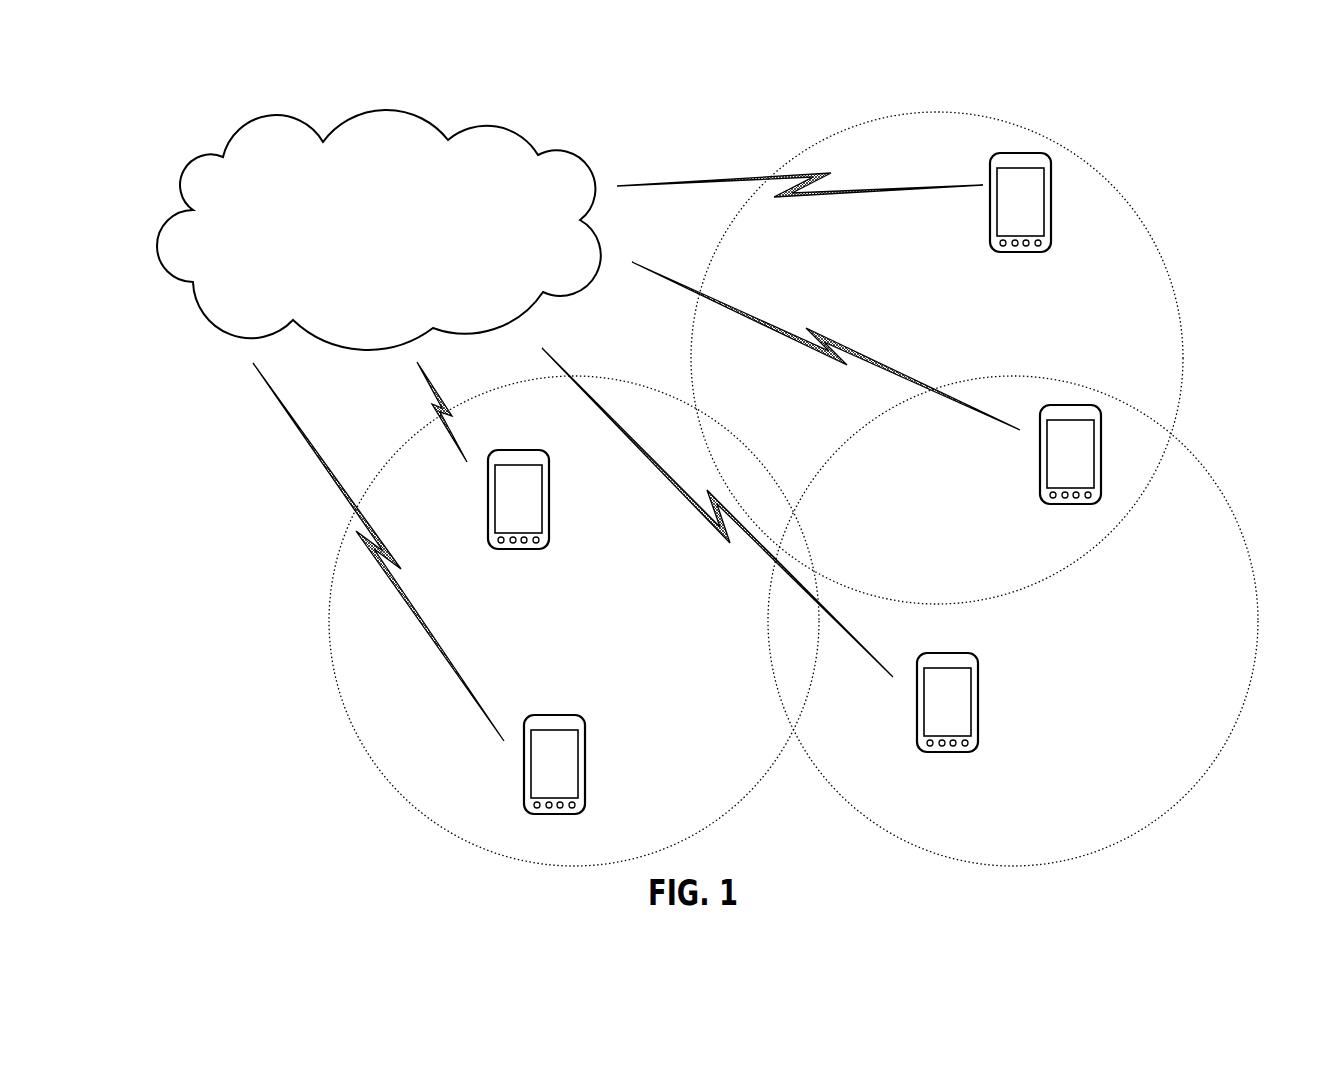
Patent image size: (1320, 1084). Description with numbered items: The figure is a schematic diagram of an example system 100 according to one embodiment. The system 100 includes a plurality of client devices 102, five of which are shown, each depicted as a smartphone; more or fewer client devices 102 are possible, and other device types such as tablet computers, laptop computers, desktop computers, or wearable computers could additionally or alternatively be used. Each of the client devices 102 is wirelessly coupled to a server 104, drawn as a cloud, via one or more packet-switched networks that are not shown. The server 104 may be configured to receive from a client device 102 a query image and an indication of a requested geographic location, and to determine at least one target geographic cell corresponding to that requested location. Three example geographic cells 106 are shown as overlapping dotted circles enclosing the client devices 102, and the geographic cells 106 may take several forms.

The system 100 is at (218, 750).
The client device 102 is at (990, 202).
The server 104 is at (400, 240).
The geographic cell 106 is at (1178, 303).